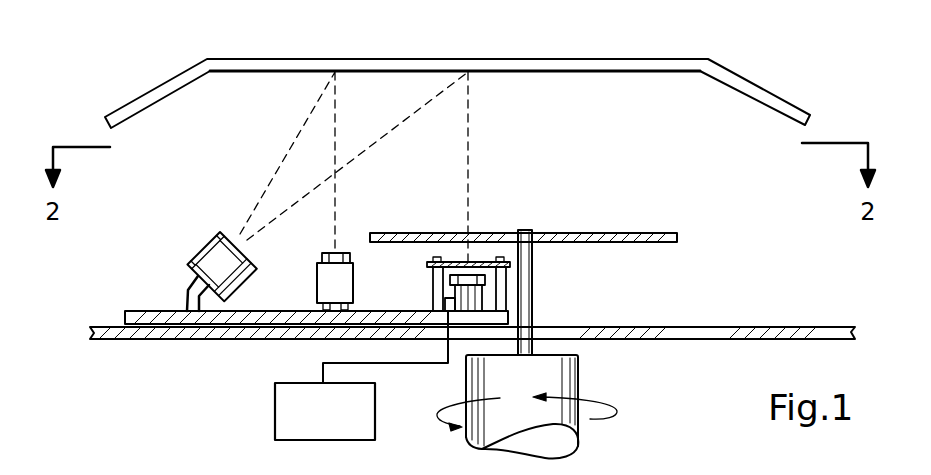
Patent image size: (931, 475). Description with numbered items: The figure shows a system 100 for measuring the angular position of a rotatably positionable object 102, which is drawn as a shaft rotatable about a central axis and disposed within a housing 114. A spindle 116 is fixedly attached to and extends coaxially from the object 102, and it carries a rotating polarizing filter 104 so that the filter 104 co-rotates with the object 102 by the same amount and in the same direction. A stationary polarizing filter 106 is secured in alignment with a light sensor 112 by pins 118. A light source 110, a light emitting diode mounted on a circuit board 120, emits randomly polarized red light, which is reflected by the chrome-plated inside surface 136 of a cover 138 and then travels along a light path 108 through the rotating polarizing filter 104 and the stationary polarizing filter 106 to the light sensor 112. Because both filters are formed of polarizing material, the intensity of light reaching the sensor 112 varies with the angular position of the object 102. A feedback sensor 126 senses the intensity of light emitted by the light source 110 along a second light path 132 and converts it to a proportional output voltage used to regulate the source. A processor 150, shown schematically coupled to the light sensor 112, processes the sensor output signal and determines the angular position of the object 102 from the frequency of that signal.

The system 100 is at (168, 62).
The rotatably positionable object 102 is at (580, 431).
The rotating polarizing filter 104 is at (605, 233).
The stationary polarizing filter 106 is at (427, 262).
The light path 108 is at (470, 186).
The light source 110 is at (198, 248).
The light sensor 112 is at (450, 280).
The housing 114 is at (705, 327).
The spindle 116 is at (532, 282).
The pins 118 is at (445, 302).
The circuit board 120 is at (145, 311).
The feedback sensor 126 is at (324, 291).
The light path 132 is at (292, 146).
The inside surface 136 is at (582, 73).
The cover 138 is at (618, 62).
The processor 150 is at (311, 424).